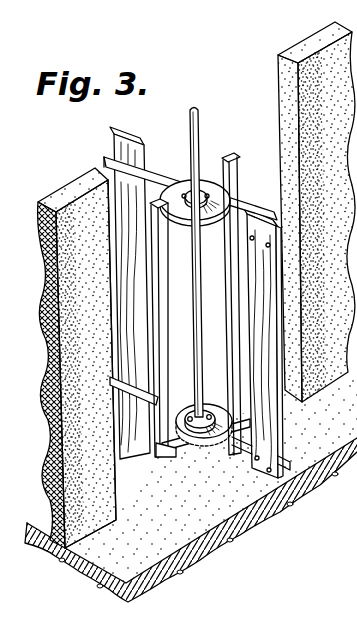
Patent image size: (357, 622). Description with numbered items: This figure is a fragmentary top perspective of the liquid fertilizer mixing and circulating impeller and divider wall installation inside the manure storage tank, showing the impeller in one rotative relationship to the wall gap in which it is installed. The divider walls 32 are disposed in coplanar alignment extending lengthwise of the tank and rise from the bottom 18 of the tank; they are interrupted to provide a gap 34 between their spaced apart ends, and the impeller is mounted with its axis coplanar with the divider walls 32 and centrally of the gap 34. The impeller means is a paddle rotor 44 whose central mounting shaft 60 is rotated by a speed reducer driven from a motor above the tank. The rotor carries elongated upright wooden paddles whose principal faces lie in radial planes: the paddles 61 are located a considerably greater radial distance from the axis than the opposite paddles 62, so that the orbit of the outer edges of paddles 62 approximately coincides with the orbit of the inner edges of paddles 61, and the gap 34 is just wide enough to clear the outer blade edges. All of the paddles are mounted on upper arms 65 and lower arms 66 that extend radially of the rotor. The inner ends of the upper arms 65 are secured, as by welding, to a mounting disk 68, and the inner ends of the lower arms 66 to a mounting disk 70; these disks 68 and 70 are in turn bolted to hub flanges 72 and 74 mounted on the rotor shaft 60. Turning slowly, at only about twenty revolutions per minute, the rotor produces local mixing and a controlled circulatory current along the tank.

The bottom 18 is at (158, 503).
The divider walls 32 is at (190, 281).
The gap 34 is at (284, 83).
The paddle rotor 44 is at (197, 275).
The central mounting shaft 60 is at (200, 127).
The paddles 61 is at (143, 116).
The paddles 62 is at (231, 158).
The upper arms 65 is at (165, 182).
The lower arms 66 is at (218, 448).
The mounting disk 68 is at (185, 224).
The mounting disk 70 is at (181, 404).
The hub flange 72 is at (188, 191).
The hub flange 74 is at (203, 403).